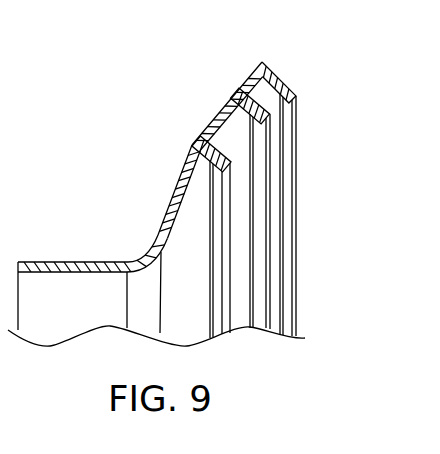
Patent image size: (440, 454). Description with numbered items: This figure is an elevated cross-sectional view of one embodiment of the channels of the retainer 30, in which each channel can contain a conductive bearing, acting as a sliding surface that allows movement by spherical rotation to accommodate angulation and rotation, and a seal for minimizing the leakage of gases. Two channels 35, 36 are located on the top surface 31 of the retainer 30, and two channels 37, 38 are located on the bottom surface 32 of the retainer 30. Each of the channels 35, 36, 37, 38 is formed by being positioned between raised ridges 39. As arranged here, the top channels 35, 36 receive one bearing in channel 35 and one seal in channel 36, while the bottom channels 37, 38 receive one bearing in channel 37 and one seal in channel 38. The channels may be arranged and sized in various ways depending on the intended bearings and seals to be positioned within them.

The retainer 30 is at (298, 64).
The top surface 31 is at (162, 225).
The bottom surface 32 is at (187, 282).
The top channel 35 is at (229, 126).
The top channel 36 is at (257, 82).
The bottom channel 37 is at (244, 136).
The bottom channel 38 is at (272, 103).
The raised ridges 39 is at (260, 61).